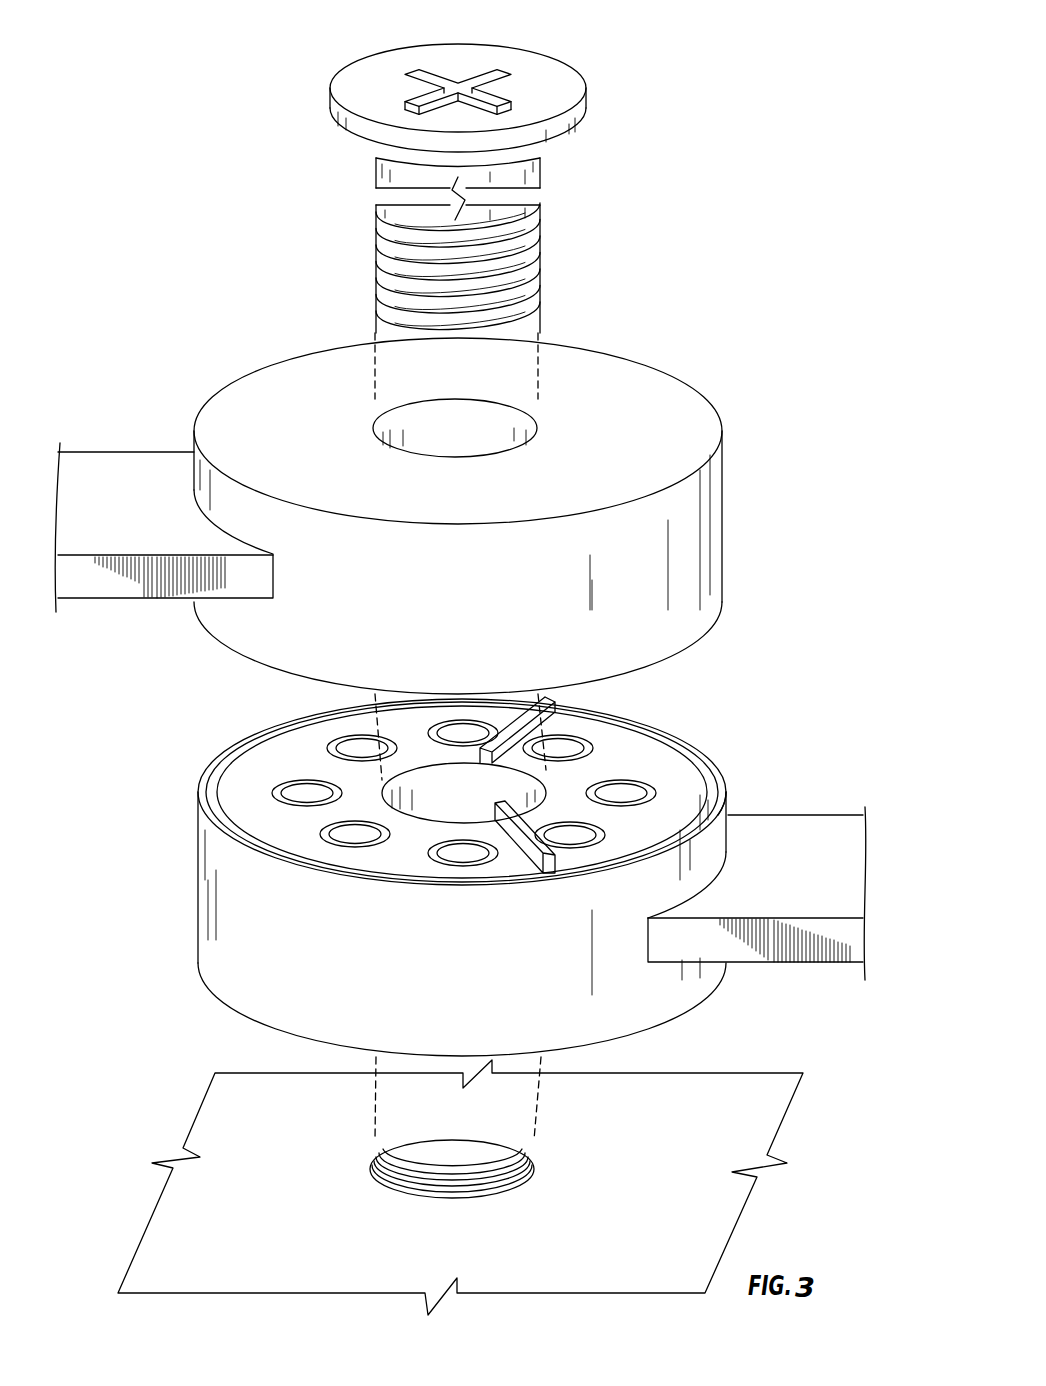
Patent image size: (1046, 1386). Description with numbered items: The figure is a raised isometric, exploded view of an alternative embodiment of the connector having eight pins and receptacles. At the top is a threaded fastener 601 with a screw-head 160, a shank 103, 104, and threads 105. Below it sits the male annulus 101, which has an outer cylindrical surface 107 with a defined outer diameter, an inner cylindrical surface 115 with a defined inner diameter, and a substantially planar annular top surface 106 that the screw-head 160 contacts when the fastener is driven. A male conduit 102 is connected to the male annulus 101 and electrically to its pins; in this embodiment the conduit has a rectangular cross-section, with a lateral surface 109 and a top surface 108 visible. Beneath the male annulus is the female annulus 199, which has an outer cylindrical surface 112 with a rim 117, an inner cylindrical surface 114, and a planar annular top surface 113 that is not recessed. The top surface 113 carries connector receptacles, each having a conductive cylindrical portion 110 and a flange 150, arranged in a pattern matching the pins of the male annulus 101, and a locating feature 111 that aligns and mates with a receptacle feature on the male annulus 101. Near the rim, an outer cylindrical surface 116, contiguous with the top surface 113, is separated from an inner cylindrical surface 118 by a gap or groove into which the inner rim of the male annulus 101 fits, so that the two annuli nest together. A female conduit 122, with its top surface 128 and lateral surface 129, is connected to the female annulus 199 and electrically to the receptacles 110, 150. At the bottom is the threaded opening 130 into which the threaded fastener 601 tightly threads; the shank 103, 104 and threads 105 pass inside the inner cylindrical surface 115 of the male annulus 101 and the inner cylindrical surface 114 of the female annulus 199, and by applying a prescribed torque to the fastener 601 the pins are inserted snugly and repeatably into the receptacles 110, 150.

The threaded fastener 601 is at (432, 171).
The screw-head 160 is at (525, 70).
The shank 103 is at (383, 172).
The shank 104 is at (400, 215).
The threads 105 is at (385, 270).
The male annulus 101 is at (475, 491).
The inner cylindrical surface 115 is at (485, 418).
The substantially planar annular top surface 106 is at (670, 395).
The outer cylindrical surface 107 is at (710, 535).
The male conduit 102 is at (160, 508).
The top surface 108 is at (138, 470).
The lateral surface 109 is at (92, 585).
The cylindrical portion of receptacle 110 is at (364, 745).
The locating feature 111 is at (558, 703).
The flange 150 is at (232, 778).
The inner cylindrical surface 118 is at (218, 771).
The planar annular top surface 113 is at (418, 842).
The outer cylindrical surface 112 is at (228, 907).
The inner cylindrical surface 114 is at (455, 810).
The rim 117 is at (703, 757).
The outer cylindrical surface 116 is at (707, 822).
The female conduit 122 is at (763, 854).
The top surface 128 is at (800, 838).
The lateral surface 129 is at (748, 952).
The female annulus 199 is at (473, 1168).
The threaded opening 130 is at (385, 1186).